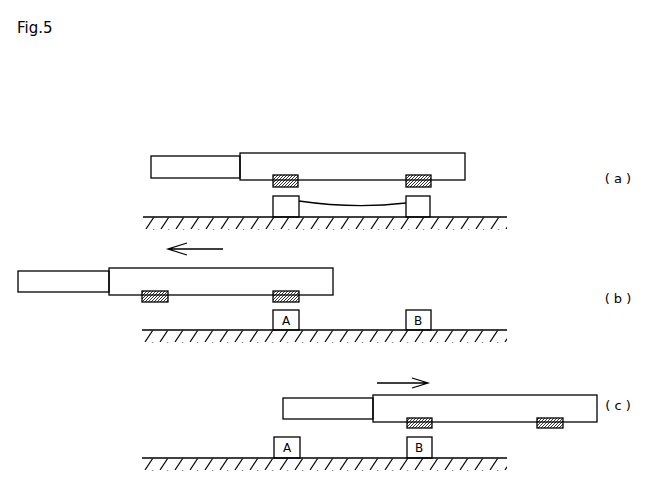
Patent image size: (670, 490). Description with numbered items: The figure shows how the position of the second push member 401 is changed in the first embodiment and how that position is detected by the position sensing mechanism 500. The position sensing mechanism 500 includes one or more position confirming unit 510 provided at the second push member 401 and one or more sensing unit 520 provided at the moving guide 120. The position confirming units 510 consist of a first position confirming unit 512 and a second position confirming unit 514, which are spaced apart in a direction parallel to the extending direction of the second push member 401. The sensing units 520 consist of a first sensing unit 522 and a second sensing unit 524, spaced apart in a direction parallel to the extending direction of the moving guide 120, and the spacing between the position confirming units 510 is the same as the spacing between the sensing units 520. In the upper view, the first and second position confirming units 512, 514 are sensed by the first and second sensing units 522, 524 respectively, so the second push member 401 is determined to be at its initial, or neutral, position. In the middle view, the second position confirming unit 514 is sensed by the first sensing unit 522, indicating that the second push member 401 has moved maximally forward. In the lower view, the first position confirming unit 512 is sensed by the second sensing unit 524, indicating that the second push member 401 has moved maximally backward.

The second push member 401 is at (192, 163).
The moving guide 120 is at (216, 227).
The position sensing mechanism 500 is at (358, 83).
The position confirming unit 510 is at (415, 112).
The first position confirming unit 512 is at (297, 177).
The second position confirming unit 514 is at (420, 177).
The sensing unit 520 is at (510, 112).
The first sensing unit 522 is at (407, 197).
The second sensing unit 524 is at (428, 207).